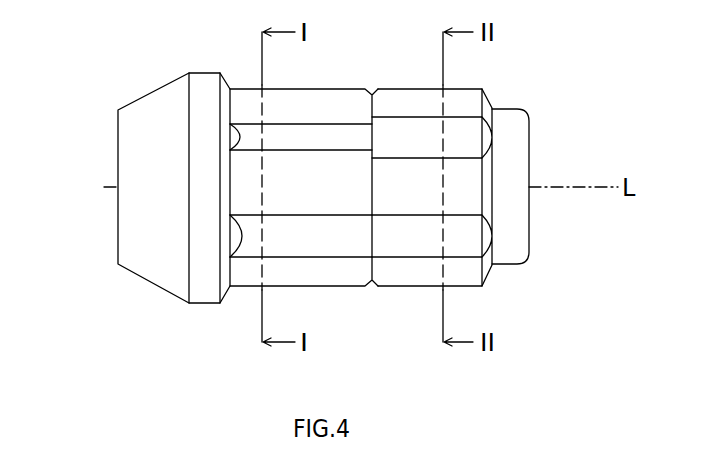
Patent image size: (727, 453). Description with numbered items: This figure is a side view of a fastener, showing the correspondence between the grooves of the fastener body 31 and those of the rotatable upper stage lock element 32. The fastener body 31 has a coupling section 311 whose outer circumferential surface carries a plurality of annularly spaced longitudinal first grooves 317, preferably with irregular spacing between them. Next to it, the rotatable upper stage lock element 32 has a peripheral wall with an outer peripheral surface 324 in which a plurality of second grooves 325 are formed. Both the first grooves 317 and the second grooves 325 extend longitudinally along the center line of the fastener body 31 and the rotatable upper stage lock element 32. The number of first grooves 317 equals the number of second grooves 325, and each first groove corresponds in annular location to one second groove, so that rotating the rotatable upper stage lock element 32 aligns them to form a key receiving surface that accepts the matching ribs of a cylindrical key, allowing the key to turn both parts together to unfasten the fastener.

The fastener body 31 is at (136, 63).
The rotatable upper stage lock element 32 is at (518, 84).
The coupling section 311 is at (322, 110).
The first grooves 317 is at (319, 248).
The outer peripheral surface 324 is at (462, 272).
The second grooves 325 is at (410, 250).